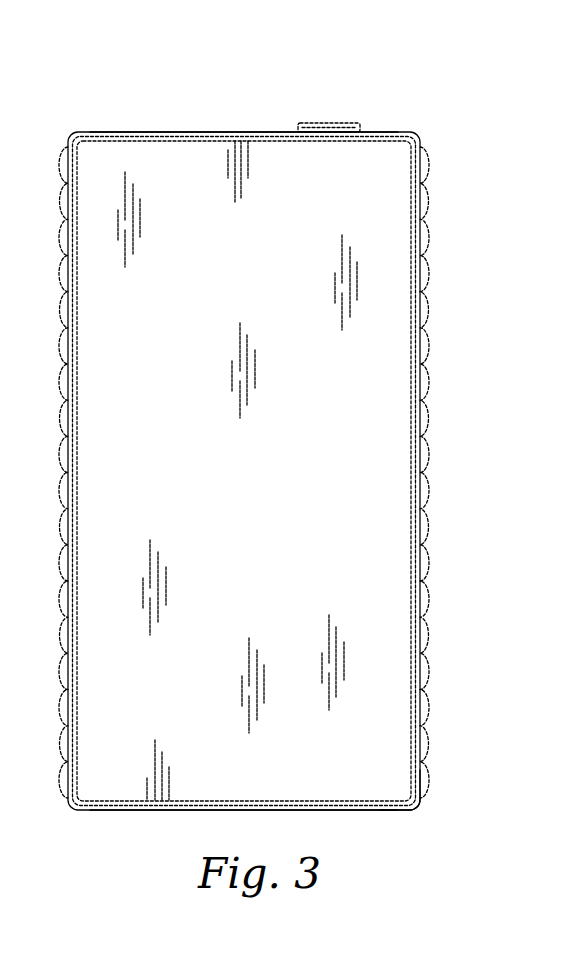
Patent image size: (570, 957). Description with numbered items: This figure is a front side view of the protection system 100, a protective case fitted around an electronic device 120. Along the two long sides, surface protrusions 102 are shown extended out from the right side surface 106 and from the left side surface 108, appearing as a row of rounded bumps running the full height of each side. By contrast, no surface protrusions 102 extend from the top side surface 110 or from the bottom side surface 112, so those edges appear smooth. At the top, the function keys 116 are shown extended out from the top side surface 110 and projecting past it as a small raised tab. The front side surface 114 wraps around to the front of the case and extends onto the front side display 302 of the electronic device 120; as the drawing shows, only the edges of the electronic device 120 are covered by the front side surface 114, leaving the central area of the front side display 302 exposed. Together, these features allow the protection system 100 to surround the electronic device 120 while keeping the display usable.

The protection system 100 is at (467, 68).
The surface protrusions 102 is at (433, 204).
The right side surface 106 is at (431, 295).
The left side surface 108 is at (66, 183).
The top side surface 110 is at (200, 131).
The bottom side surface 112 is at (205, 812).
The front side surface 114 is at (390, 806).
The function keys 116 is at (334, 122).
The electronic device 120 is at (300, 764).
The front side display 302 is at (372, 565).